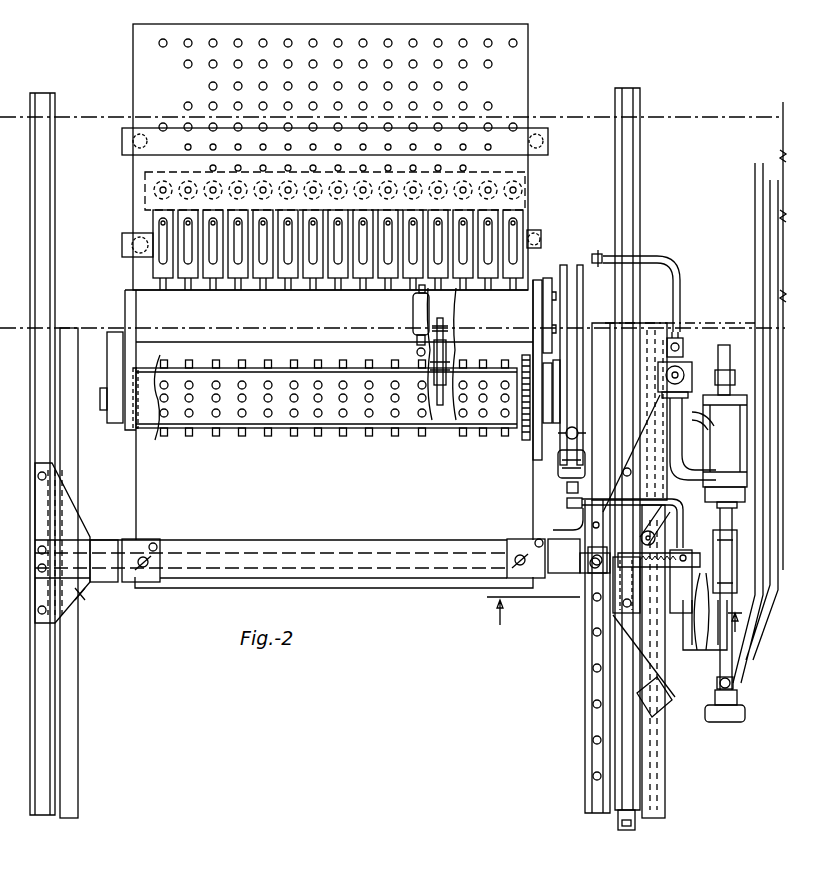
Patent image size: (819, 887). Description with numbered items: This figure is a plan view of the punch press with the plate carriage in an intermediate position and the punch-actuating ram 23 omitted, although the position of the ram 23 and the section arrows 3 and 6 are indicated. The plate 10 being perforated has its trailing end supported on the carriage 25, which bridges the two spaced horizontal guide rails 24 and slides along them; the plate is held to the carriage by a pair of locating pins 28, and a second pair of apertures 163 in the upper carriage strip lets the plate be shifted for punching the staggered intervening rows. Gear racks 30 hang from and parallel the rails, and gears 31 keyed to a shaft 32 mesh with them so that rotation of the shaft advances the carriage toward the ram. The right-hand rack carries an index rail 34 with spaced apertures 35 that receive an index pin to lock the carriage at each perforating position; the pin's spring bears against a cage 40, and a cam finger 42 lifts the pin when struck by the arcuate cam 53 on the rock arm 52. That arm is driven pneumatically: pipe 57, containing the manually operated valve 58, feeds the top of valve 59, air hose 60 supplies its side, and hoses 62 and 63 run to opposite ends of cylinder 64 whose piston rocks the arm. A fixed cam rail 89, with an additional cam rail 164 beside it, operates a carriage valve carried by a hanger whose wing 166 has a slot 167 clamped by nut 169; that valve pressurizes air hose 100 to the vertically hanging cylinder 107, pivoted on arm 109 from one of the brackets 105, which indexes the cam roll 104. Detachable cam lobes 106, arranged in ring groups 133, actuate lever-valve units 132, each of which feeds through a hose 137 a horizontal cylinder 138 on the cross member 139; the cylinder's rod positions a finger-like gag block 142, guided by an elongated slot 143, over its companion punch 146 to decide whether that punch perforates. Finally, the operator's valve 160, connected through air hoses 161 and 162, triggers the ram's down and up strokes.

The plate 10 is at (530, 52).
The ram 23 is at (706, 117).
The guide rails 24 is at (55, 232).
The direction arrow for Fig. 3 view 3 is at (700, 191).
The punches 146 is at (525, 190).
The elongated slot 143 is at (155, 228).
The gag block 142 is at (152, 258).
The brackets 105 is at (112, 425).
The arm 109 is at (563, 265).
The air hose 60 is at (657, 257).
The gear racks 30 is at (78, 745).
The cross member 139 is at (300, 322).
The horizontal cylinder 138 is at (412, 300).
The hose 137 is at (416, 352).
The lever-valve unit 132 is at (448, 366).
The ring group 133 is at (160, 430).
The cam lobes 106 is at (243, 436).
The cam roll 104 is at (332, 436).
The cylinder 107 is at (560, 470).
The air hose 100 is at (570, 512).
The valve 59 is at (690, 360).
The hose 62 is at (710, 389).
The cylinder 64 is at (725, 451).
The hose 63 is at (693, 439).
The pipe 57 is at (698, 495).
The cam finger 42 is at (690, 550).
The rock arm 52 is at (737, 545).
The locating pins 28 is at (143, 556).
The apertures 163 is at (155, 547).
The shaft 32 is at (285, 555).
The gears 31 is at (80, 598).
The carriage 25 is at (178, 580).
The cage 40 is at (580, 572).
The nut 169 is at (616, 540).
The slot 167 is at (640, 528).
The wing 166 is at (630, 585).
The arcuate cam 53 is at (700, 650).
The manually operated valve 58 is at (665, 712).
The valve 160 is at (725, 722).
The air hose 162 is at (742, 665).
The air hose 161 is at (733, 680).
The apertures 35 is at (585, 776).
The index rail 34 is at (585, 813).
The cam rail 89 is at (665, 818).
The additional cam rail 164 is at (645, 822).
The direction arrow for Fig. 6 view 6 is at (614, 623).